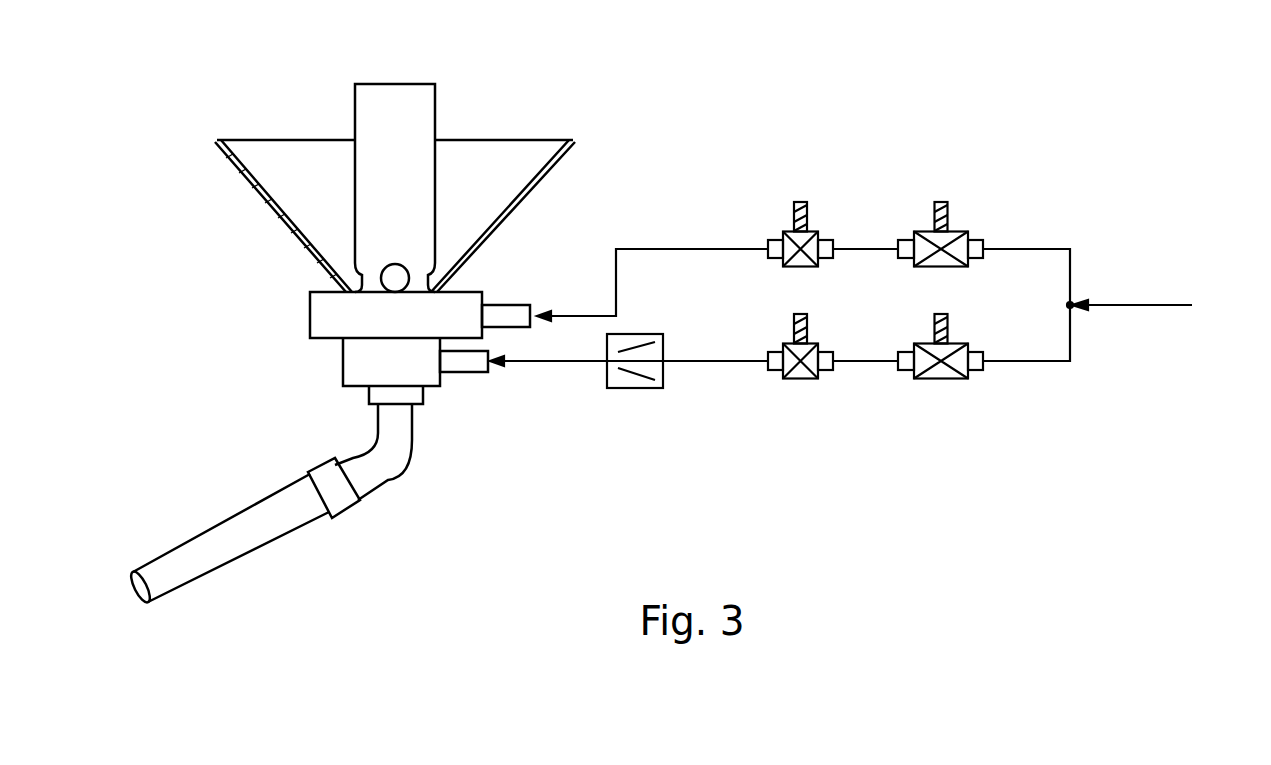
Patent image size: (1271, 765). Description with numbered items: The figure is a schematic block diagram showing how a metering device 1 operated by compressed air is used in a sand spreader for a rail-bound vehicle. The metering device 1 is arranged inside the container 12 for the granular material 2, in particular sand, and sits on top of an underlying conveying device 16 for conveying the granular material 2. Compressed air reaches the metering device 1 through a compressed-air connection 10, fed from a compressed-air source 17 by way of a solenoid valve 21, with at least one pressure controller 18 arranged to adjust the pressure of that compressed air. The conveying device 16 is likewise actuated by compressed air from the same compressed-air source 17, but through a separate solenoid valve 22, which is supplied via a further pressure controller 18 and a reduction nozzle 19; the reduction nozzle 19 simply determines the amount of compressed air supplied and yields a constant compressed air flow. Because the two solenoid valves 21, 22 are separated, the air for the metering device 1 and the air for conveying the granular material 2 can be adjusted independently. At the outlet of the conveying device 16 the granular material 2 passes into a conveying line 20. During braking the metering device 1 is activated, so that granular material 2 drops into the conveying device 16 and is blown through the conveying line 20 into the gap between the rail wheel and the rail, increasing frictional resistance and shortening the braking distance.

The metering device 1 is at (334, 110).
The granular material 2 is at (462, 222).
The compressed-air connection 10 is at (505, 303).
The container 12 is at (263, 202).
The conveying device 16 is at (370, 357).
The compressed-air source 17 is at (1113, 307).
The pressure controller 18 is at (785, 235).
The reduction nozzle 19 is at (637, 392).
The conveying line 20 is at (203, 560).
The solenoid valve 21 is at (922, 232).
The solenoid valve 22 is at (930, 380).